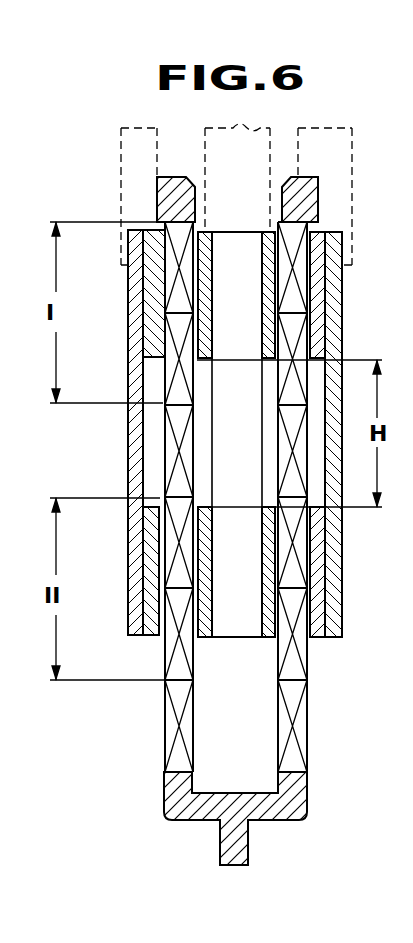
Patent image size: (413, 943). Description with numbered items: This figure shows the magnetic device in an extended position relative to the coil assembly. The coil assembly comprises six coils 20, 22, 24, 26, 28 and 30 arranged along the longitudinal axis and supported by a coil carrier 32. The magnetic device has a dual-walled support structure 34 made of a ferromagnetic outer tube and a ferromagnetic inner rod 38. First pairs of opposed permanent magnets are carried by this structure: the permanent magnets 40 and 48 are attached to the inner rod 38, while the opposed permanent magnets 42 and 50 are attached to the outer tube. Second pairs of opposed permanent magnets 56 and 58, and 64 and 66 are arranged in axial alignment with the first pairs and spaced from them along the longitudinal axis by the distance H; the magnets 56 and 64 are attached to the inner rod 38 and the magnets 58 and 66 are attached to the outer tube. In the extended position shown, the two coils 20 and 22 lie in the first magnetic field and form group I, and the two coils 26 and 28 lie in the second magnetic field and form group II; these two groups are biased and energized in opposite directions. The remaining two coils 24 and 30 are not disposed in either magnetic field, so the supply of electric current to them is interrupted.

The coil 20 is at (173, 262).
The coil 22 is at (173, 363).
The coil 24 is at (173, 455).
The coil 26 is at (168, 533).
The coil 28 is at (170, 648).
The coil 30 is at (170, 732).
The coil carrier 32 is at (297, 793).
The dual-walled support structure 34 is at (137, 422).
The inner rod 38 is at (250, 449).
The permanent magnet 40 is at (255, 232).
The permanent magnet 42 is at (312, 232).
The permanent magnet 48 is at (205, 277).
The permanent magnet 50 is at (150, 300).
The permanent magnet 56 is at (258, 627).
The permanent magnet 58 is at (318, 597).
The permanent magnet 64 is at (202, 638).
The permanent magnet 66 is at (150, 600).